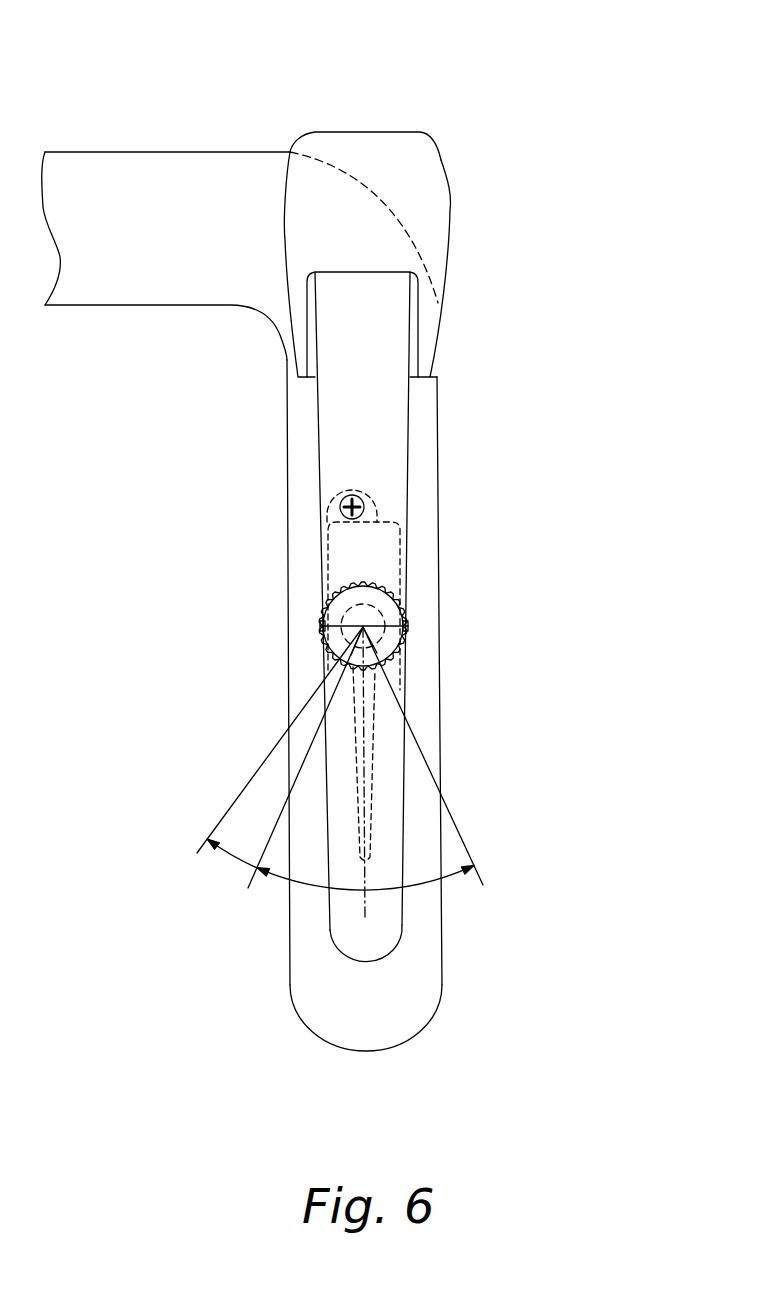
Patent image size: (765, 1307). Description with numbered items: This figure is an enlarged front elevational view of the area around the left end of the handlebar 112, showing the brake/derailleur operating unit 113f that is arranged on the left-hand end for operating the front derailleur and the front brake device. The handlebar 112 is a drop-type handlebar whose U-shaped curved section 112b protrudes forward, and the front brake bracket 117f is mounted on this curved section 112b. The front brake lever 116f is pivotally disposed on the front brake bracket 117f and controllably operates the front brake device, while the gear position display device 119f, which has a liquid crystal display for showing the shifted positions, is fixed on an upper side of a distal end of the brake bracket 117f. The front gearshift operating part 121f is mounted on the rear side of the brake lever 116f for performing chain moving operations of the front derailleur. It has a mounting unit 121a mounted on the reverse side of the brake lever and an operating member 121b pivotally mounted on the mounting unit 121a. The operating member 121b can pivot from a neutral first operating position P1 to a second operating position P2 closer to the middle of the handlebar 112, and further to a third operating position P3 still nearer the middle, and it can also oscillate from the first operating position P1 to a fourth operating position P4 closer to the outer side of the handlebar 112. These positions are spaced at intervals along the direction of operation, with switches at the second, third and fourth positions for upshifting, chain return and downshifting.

The handlebar 112 is at (168, 150).
The curved section 112b is at (425, 477).
The brake/derailleur operating unit 113f is at (292, 573).
The front brake lever 116f is at (328, 468).
The front brake bracket 117f is at (285, 197).
The gear position display device 119f is at (372, 133).
The mounting unit 121a is at (402, 550).
The operating member 121b is at (373, 773).
The front gearshift operating part 121f is at (405, 592).
The first operating position P1 is at (365, 910).
The second operating position P2 is at (292, 778).
The third operating position P3 is at (314, 762).
The fourth operating position P4 is at (442, 780).